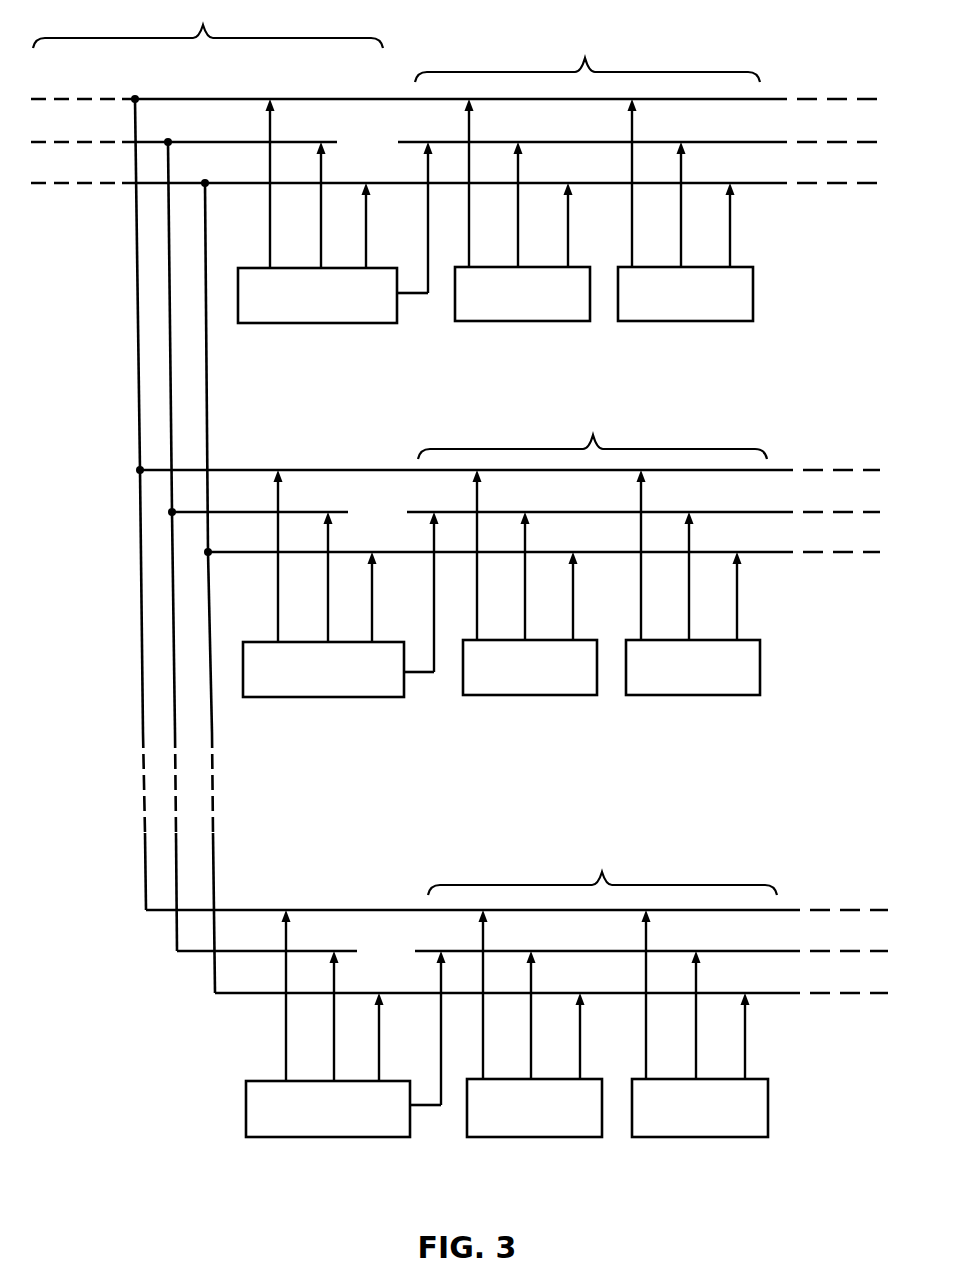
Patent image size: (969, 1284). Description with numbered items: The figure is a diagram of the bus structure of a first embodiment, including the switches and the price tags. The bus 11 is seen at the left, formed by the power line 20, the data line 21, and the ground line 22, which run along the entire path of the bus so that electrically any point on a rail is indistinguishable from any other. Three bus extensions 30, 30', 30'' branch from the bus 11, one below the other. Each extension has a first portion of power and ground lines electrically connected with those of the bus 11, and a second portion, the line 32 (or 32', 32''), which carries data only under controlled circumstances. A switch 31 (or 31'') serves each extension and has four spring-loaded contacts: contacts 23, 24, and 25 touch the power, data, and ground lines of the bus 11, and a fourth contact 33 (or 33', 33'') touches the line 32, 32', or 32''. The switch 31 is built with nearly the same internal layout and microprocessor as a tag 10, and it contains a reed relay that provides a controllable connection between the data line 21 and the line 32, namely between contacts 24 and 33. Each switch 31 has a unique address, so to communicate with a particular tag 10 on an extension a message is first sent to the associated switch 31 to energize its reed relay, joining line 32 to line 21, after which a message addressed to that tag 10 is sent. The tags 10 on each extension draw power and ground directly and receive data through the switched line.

The tag 10 is at (515, 322).
The bus 11 is at (460, 540).
The power line 20 is at (177, 97).
The data line 21 is at (230, 142).
The ground line 22 is at (243, 183).
The spring-loaded contact 23 is at (267, 198).
The spring-loaded contact 24 is at (319, 223).
The spring-loaded contact 25 is at (368, 220).
The bus extension 30 is at (587, 55).
The bus extension 30' is at (592, 430).
The bus extension 30'' is at (602, 868).
The switch 31 is at (321, 515).
The switch 31'' is at (328, 1139).
The line 32 is at (596, 193).
The line 32' is at (607, 562).
The line 32'' is at (617, 1003).
The contact 33 is at (420, 248).
The contact 33' is at (430, 627).
The contact 33'' is at (439, 1065).